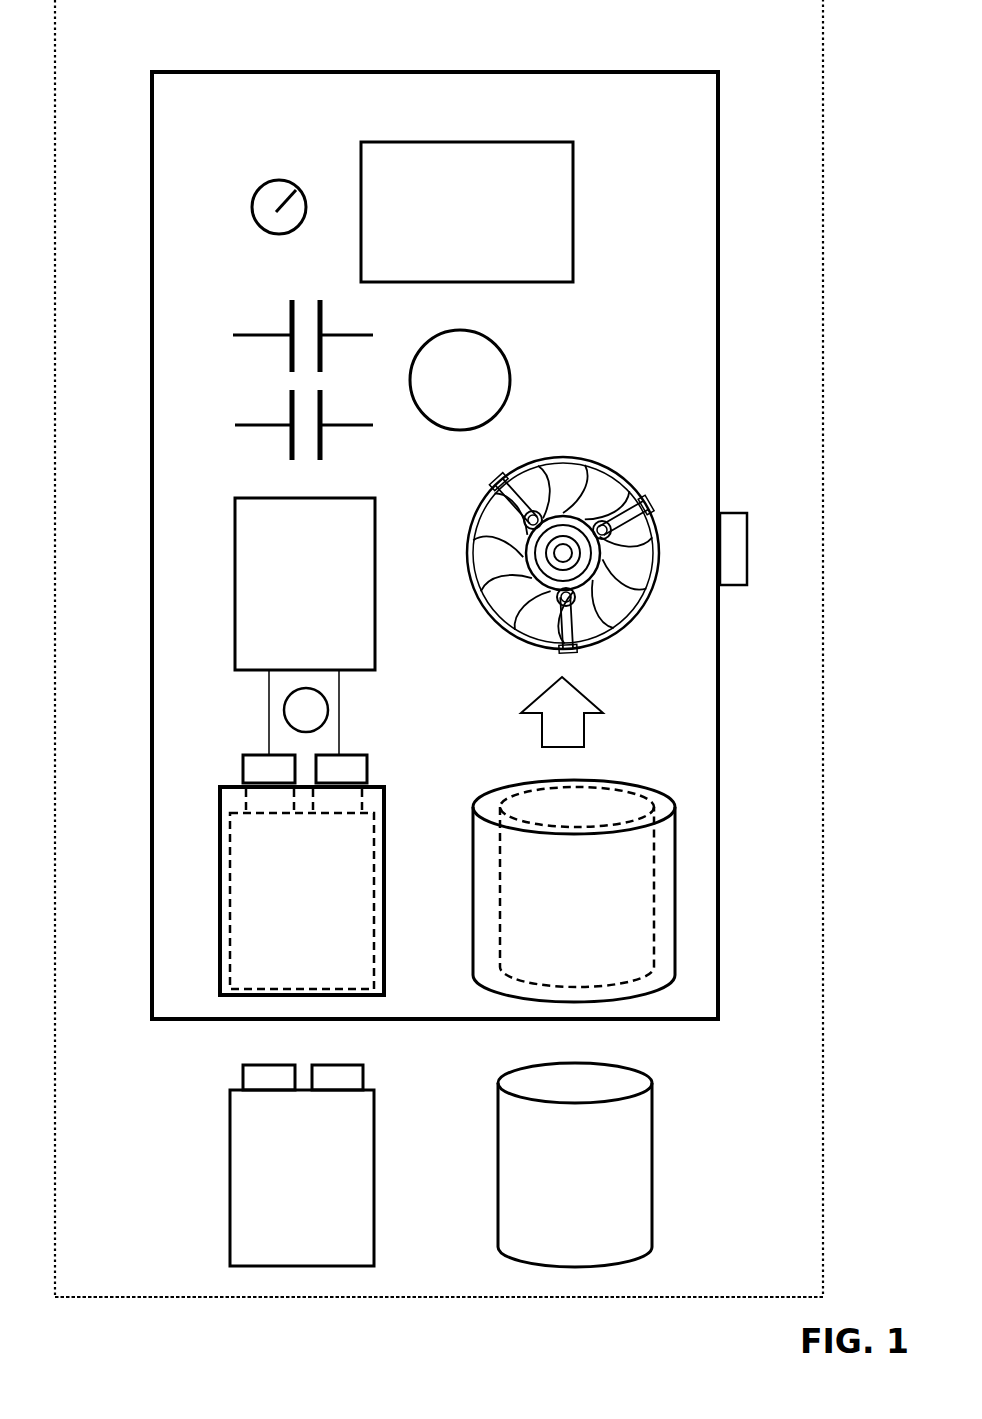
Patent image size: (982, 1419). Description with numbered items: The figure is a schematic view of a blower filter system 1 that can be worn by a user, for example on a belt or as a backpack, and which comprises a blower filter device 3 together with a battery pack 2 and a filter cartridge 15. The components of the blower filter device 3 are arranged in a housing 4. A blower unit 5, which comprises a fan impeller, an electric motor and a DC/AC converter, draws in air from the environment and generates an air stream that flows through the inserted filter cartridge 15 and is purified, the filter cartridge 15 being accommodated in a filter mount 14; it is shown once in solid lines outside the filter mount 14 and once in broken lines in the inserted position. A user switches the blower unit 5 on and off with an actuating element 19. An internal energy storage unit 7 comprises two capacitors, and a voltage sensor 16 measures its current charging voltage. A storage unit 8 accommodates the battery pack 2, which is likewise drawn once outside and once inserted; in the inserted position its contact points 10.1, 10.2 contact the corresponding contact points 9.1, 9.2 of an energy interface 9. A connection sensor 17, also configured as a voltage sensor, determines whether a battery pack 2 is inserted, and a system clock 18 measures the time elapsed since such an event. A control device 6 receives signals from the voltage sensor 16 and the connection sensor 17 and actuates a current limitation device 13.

The blower filter system 1 is at (205, 1297).
The battery pack 2 is at (284, 1152).
The blower filter device 3 is at (745, 105).
The housing 4 is at (720, 328).
The blower unit 5 is at (598, 462).
The control device 6 is at (545, 221).
The internal energy storage unit 7 is at (262, 381).
The storage unit 8 is at (215, 885).
The energy interface 9 is at (327, 696).
The electrical contact point 9.1 is at (258, 772).
The electrical contact point 9.2 is at (345, 773).
The electrical contact point 10.1 is at (265, 1073).
The electrical contact point 10.2 is at (333, 1073).
The current limitation device 13 is at (255, 610).
The filter mount 14 is at (677, 855).
The filter cartridge 15 is at (655, 1167).
The voltage sensor 16 is at (507, 348).
The connection sensor 17 is at (330, 710).
The system clock 18 is at (278, 180).
The actuating element 19 is at (728, 511).